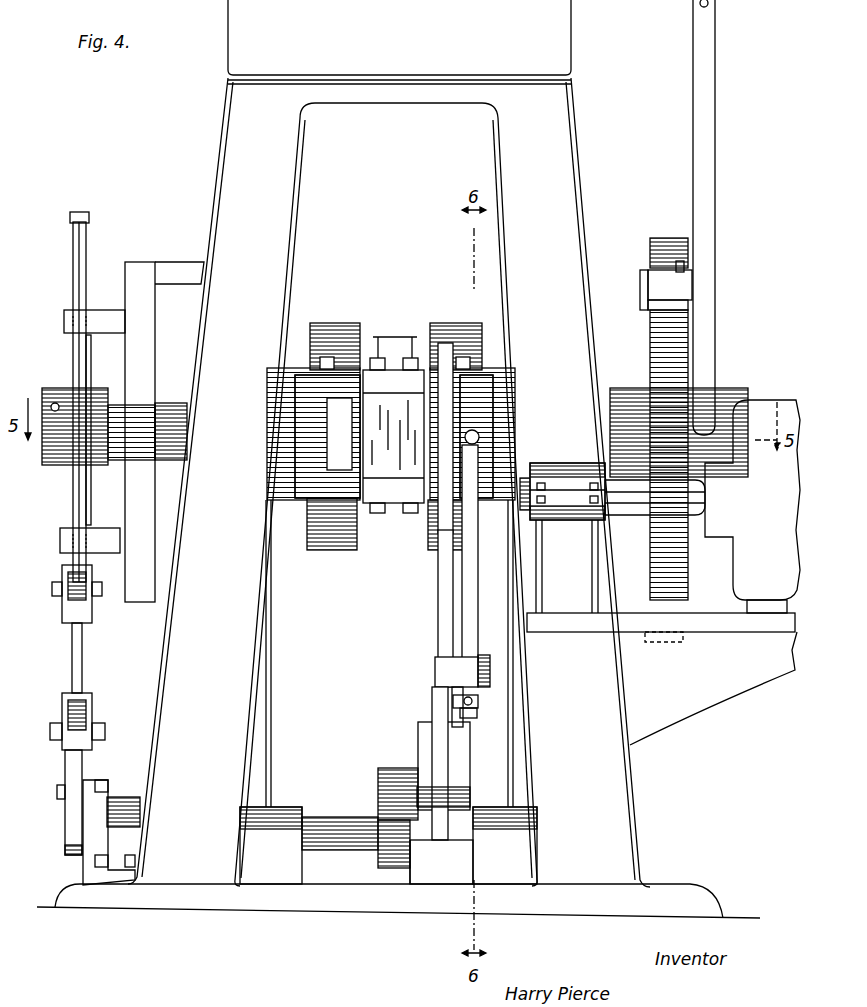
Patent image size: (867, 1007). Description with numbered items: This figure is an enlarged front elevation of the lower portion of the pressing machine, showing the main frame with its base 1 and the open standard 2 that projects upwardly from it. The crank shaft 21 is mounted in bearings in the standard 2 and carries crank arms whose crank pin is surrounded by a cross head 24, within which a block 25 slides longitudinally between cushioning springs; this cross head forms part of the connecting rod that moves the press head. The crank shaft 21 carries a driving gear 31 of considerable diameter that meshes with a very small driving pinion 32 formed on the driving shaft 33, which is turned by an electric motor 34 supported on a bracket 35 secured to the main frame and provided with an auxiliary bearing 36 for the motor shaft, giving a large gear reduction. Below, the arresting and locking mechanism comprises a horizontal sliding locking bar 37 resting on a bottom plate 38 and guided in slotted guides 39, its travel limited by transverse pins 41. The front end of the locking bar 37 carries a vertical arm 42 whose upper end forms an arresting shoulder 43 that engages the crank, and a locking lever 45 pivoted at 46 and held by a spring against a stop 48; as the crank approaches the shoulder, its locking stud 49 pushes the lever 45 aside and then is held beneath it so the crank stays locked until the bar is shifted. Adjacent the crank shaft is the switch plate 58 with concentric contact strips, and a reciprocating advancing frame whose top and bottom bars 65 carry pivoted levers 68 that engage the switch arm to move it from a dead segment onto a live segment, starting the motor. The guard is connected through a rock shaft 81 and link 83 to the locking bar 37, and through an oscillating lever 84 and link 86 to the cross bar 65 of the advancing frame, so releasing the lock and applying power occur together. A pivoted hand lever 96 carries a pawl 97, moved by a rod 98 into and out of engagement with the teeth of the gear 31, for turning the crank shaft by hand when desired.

The base 1 is at (698, 900).
The standard 2 is at (553, 205).
The crank shaft 21 is at (118, 468).
The cross head 24 is at (400, 470).
The block 25 is at (366, 370).
The driving gear 31 is at (667, 246).
The driving pinion 32 is at (636, 510).
The driving shaft 33 is at (690, 522).
The electric motor 34 is at (752, 506).
The bracket 35 is at (733, 632).
The auxiliary bearing 36 is at (548, 468).
The locking bar 37 is at (440, 765).
The bottom plate 38 is at (445, 872).
The guides 39 is at (422, 740).
The pins 41 is at (462, 797).
The vertical arm 42 is at (445, 557).
The arresting shoulder 43 is at (450, 357).
The locking lever 45 is at (474, 620).
The pivot 46 is at (490, 673).
The stop 48 is at (470, 703).
The locking stud 49 is at (478, 432).
The switch plate 58 is at (140, 275).
The bars of advancing frame 65 is at (88, 222).
The pivoted levers 68 is at (84, 483).
The rock shaft 81 is at (336, 850).
The link 83 is at (395, 775).
The oscillating lever 84 is at (75, 763).
The link 86 is at (78, 662).
The hand lever 96 is at (712, 124).
The pawl 97 is at (675, 287).
The rod 98 is at (685, 267).